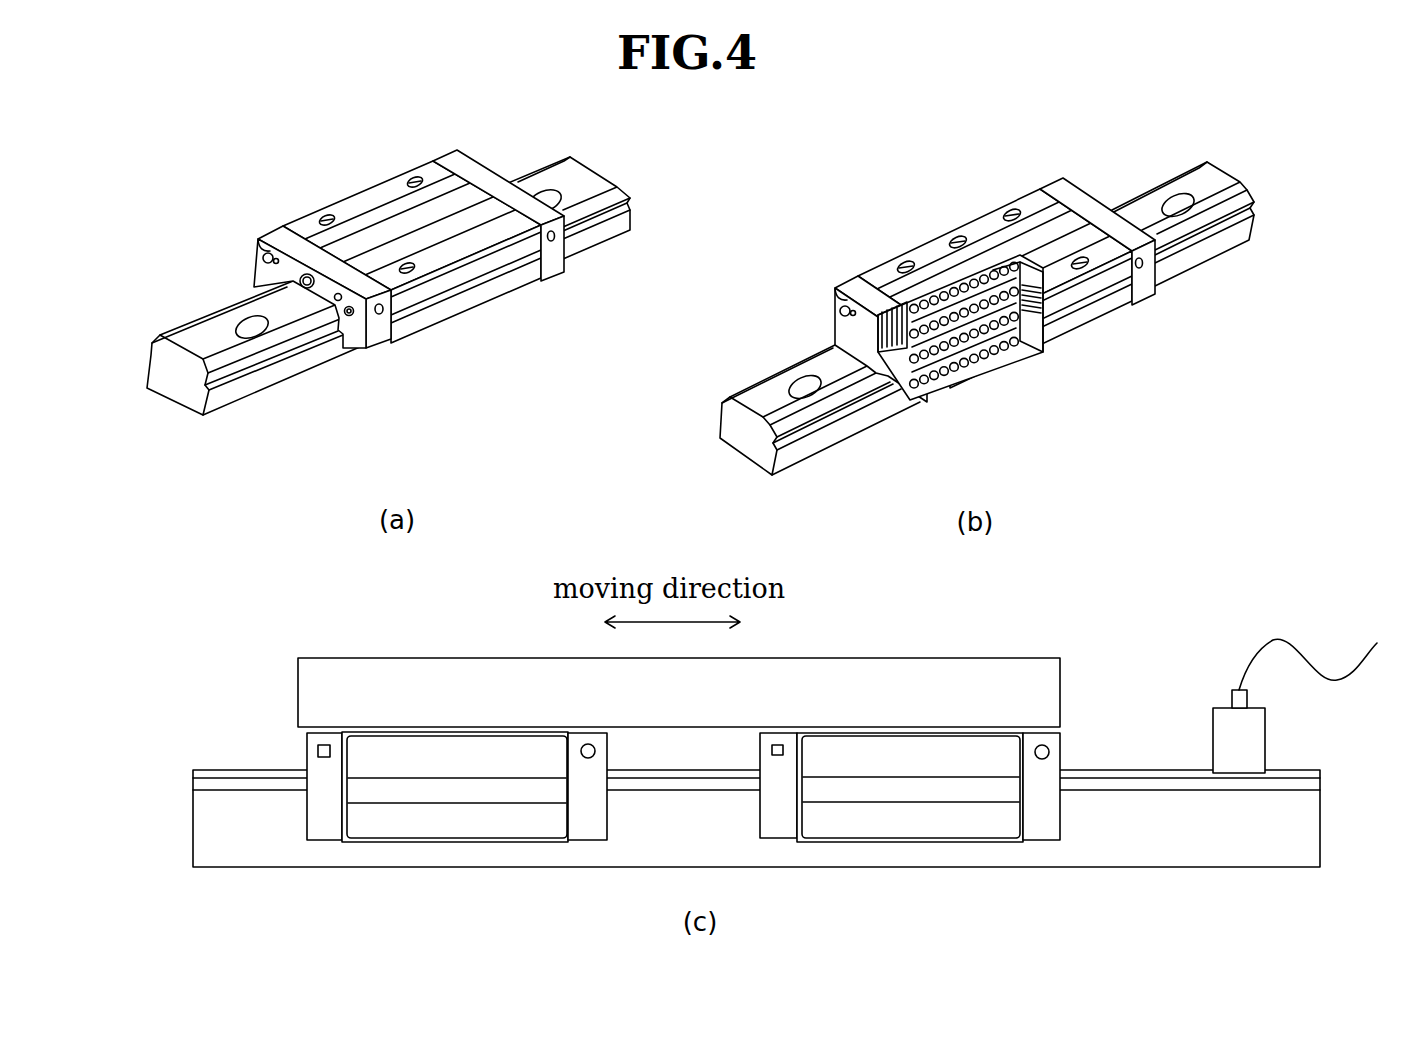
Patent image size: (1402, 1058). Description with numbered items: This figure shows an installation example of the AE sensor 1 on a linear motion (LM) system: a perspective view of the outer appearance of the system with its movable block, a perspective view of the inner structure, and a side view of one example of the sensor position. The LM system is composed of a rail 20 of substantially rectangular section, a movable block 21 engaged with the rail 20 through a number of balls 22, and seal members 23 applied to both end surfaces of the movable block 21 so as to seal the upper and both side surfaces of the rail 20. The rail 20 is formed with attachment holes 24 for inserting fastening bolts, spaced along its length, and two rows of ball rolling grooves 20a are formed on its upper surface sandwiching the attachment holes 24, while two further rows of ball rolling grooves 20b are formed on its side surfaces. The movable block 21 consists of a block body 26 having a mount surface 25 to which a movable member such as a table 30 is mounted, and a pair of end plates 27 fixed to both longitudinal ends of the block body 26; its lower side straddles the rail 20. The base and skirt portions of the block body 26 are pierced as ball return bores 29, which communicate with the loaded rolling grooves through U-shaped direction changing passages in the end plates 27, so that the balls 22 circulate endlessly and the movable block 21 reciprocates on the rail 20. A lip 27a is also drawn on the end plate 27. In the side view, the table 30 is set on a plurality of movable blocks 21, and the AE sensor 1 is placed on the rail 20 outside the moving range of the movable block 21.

The AE sensor 1 is at (1260, 737).
The rail 20 is at (262, 382).
The ball rolling grooves 20a is at (173, 332).
The ball rolling grooves 20b is at (150, 357).
The movable block 21 is at (313, 198).
The balls 22 is at (937, 300).
The seal members 23 is at (258, 274).
The attachment holes 24 is at (573, 187).
The mount surface 25 is at (352, 205).
The block body 26 is at (394, 163).
The end plates 27 is at (455, 155).
The lip of end plate 27a is at (270, 243).
The ball return bores 29 is at (1020, 262).
The table 30 is at (932, 675).